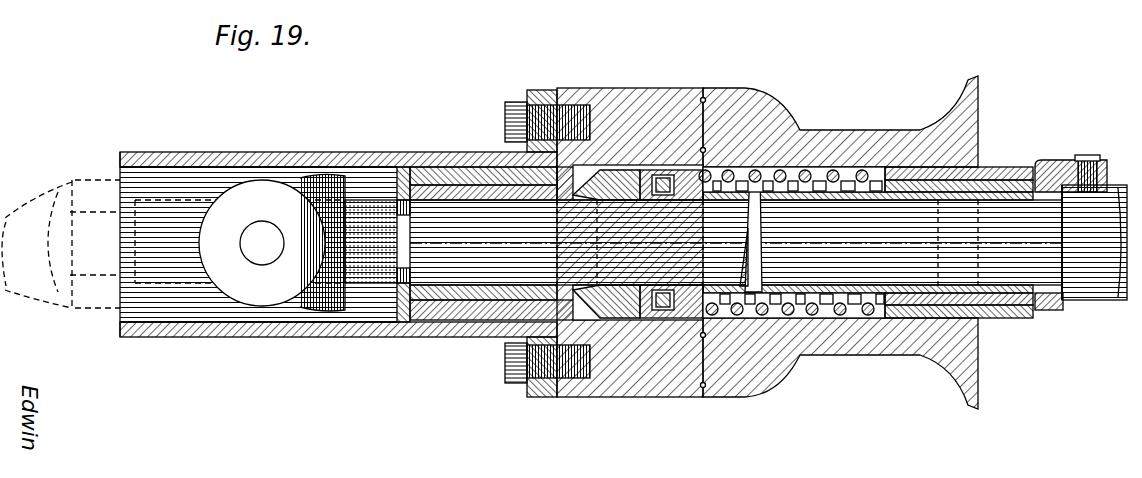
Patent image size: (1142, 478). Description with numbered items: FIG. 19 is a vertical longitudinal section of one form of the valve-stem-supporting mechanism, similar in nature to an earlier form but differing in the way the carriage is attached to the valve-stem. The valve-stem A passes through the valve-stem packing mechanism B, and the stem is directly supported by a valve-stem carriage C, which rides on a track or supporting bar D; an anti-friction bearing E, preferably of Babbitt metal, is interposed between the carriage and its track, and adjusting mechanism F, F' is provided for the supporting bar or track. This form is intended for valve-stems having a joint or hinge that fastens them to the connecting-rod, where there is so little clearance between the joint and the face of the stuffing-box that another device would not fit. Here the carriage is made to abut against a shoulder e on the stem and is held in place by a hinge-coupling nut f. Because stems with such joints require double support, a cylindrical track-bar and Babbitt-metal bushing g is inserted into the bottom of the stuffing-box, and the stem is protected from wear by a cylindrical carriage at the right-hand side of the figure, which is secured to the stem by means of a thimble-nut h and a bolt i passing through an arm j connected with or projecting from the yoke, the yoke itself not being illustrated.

The valve-stem A is at (736, 231).
The valve-stem packing mechanism B is at (632, 200).
The valve-stem carriage C is at (462, 322).
The track or supporting bar D is at (348, 162).
The anti-friction bearing E is at (442, 172).
The adjusting mechanism F is at (538, 117).
The adjusting mechanism F' is at (543, 370).
The shoulder e is at (408, 241).
The hinge-coupling nut f is at (262, 243).
The cylindrical track-bar and Babbitt-metal bushing g is at (970, 195).
The thimble-nut h is at (1071, 247).
The bolt i is at (1087, 157).
The arm j is at (1110, 180).